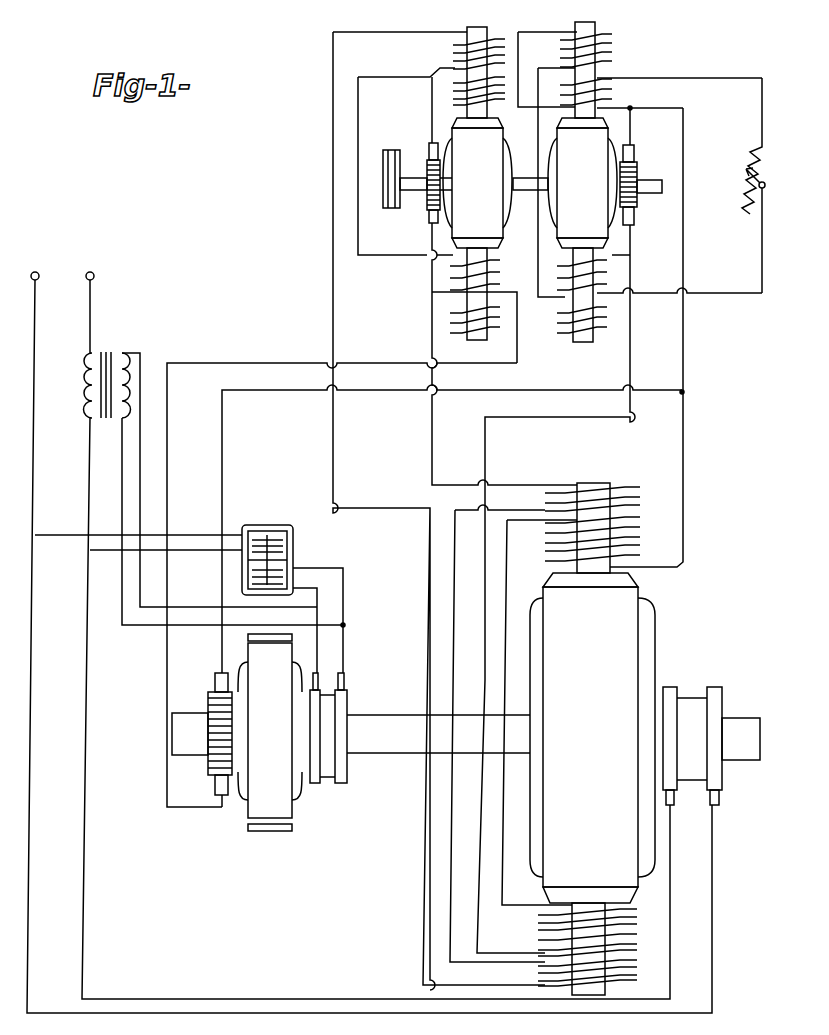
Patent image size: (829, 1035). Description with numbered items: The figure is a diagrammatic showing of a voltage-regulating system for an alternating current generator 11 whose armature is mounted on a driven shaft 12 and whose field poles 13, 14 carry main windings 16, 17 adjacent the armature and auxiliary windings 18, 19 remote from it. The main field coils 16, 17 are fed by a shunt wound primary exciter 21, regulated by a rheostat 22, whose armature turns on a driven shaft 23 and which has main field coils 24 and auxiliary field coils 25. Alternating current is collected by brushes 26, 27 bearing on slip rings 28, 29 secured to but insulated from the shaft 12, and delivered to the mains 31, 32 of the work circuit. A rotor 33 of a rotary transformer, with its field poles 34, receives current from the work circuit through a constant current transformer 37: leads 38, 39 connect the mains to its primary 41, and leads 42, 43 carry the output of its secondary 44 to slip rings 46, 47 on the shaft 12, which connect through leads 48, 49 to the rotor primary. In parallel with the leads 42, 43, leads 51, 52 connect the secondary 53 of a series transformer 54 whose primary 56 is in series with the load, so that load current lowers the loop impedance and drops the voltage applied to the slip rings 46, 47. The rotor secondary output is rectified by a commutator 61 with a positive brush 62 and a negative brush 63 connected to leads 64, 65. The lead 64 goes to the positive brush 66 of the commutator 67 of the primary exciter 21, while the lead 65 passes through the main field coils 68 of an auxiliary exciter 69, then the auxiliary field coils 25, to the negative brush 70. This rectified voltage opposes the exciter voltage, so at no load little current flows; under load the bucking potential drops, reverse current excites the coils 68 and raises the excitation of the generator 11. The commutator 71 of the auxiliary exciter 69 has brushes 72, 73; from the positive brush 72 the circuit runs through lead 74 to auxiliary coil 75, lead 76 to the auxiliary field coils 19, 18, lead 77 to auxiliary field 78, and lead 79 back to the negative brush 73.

The alternating current generator 11 is at (596, 680).
The driven shaft 12 is at (388, 745).
The field pole 13 is at (612, 520).
The field pole 14 is at (598, 958).
The main winding 16 is at (630, 546).
The main winding 17 is at (618, 919).
The auxiliary winding 18 is at (630, 497).
The auxiliary winding 19 is at (620, 982).
The primary exciter 21 is at (590, 164).
The rheostat 22 is at (748, 142).
The driven shaft 23 is at (524, 190).
The main field coils 24 is at (608, 92).
The auxiliary field coils 25 is at (610, 48).
The brush 26 is at (672, 803).
The brush 27 is at (720, 800).
The slip ring 28 is at (670, 690).
The slip ring 29 is at (718, 690).
The main 31 is at (91, 305).
The main 32 is at (34, 458).
The rotor 33 is at (278, 740).
The exciter field poles 34 is at (262, 635).
The constant current transformer 37 is at (279, 521).
The lead 38 is at (198, 533).
The lead 39 is at (186, 552).
The primary 41 is at (283, 542).
The lead 42 is at (322, 596).
The lead 43 is at (343, 568).
The secondary 44 is at (283, 578).
The slip ring 46 is at (312, 784).
The slip ring 47 is at (341, 784).
The lead 48 is at (297, 672).
The lead 49 is at (298, 810).
The lead 51 is at (141, 446).
The lead 52 is at (121, 488).
The secondary 53 is at (125, 352).
The series transformer 54 is at (111, 430).
The primary 56 is at (84, 396).
The commutator 61 is at (202, 705).
The positive brush 62 is at (215, 680).
The negative brush 63 is at (215, 780).
The lead 64 is at (282, 390).
The lead 65 is at (260, 363).
The positive brush 66 is at (634, 150).
The commutator 67 is at (638, 170).
The main field coils 68 is at (475, 96).
The auxiliary exciter 69 is at (484, 162).
The negative brush 70 is at (636, 215).
The commutator 71 is at (426, 165).
The positive brush 72 is at (428, 140).
The negative brush 73 is at (428, 218).
The lead 74 is at (432, 92).
The auxiliary coil 75 is at (500, 40).
The lead 76 is at (392, 34).
The lead 77 is at (432, 438).
The auxiliary field 78 is at (497, 325).
The lead 79 is at (430, 286).